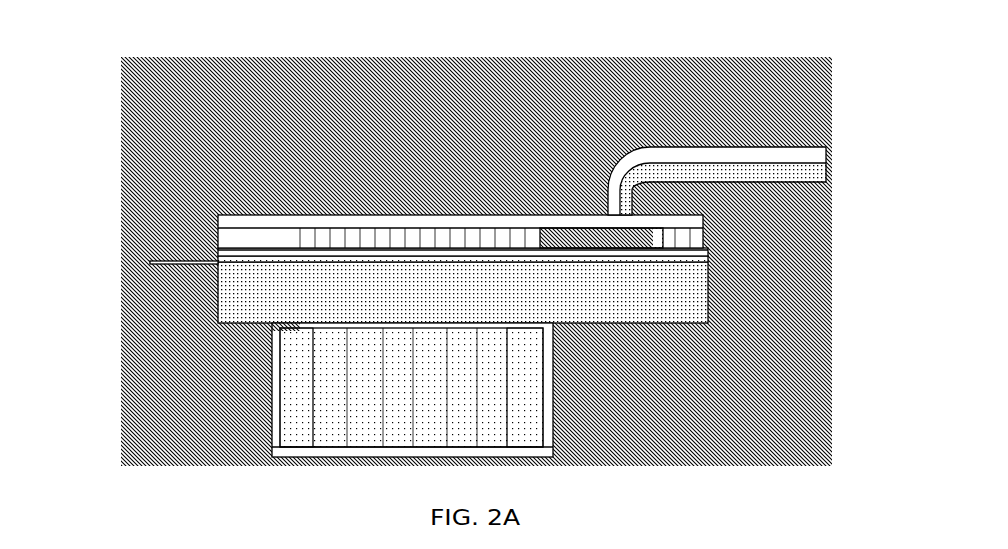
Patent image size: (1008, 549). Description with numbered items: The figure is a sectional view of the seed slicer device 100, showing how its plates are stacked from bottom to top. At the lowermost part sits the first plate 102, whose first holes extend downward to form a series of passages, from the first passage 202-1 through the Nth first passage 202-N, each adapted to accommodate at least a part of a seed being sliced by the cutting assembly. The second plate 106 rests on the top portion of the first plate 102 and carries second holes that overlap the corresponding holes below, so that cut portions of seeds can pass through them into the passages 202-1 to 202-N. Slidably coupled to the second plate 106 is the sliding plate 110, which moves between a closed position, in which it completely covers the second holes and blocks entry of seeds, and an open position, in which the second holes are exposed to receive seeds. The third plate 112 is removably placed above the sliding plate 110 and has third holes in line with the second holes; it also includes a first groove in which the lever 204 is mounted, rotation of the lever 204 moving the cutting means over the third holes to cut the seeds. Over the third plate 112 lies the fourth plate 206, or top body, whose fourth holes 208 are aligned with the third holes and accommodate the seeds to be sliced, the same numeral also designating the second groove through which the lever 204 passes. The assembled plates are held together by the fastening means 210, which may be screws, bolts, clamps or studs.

The seed slicer device 100 is at (110, 30).
The first plate 102 is at (550, 407).
The second plate 106 is at (707, 290).
The sliding plate 110 is at (173, 260).
The third plate 112 is at (705, 253).
The first passage 202-1 is at (300, 360).
The Nth first passage 202-N is at (522, 375).
The lever 204 is at (807, 162).
The fourth plate 206 is at (703, 222).
The fourth holes 208 is at (303, 215).
The fastening means 210 is at (588, 220).